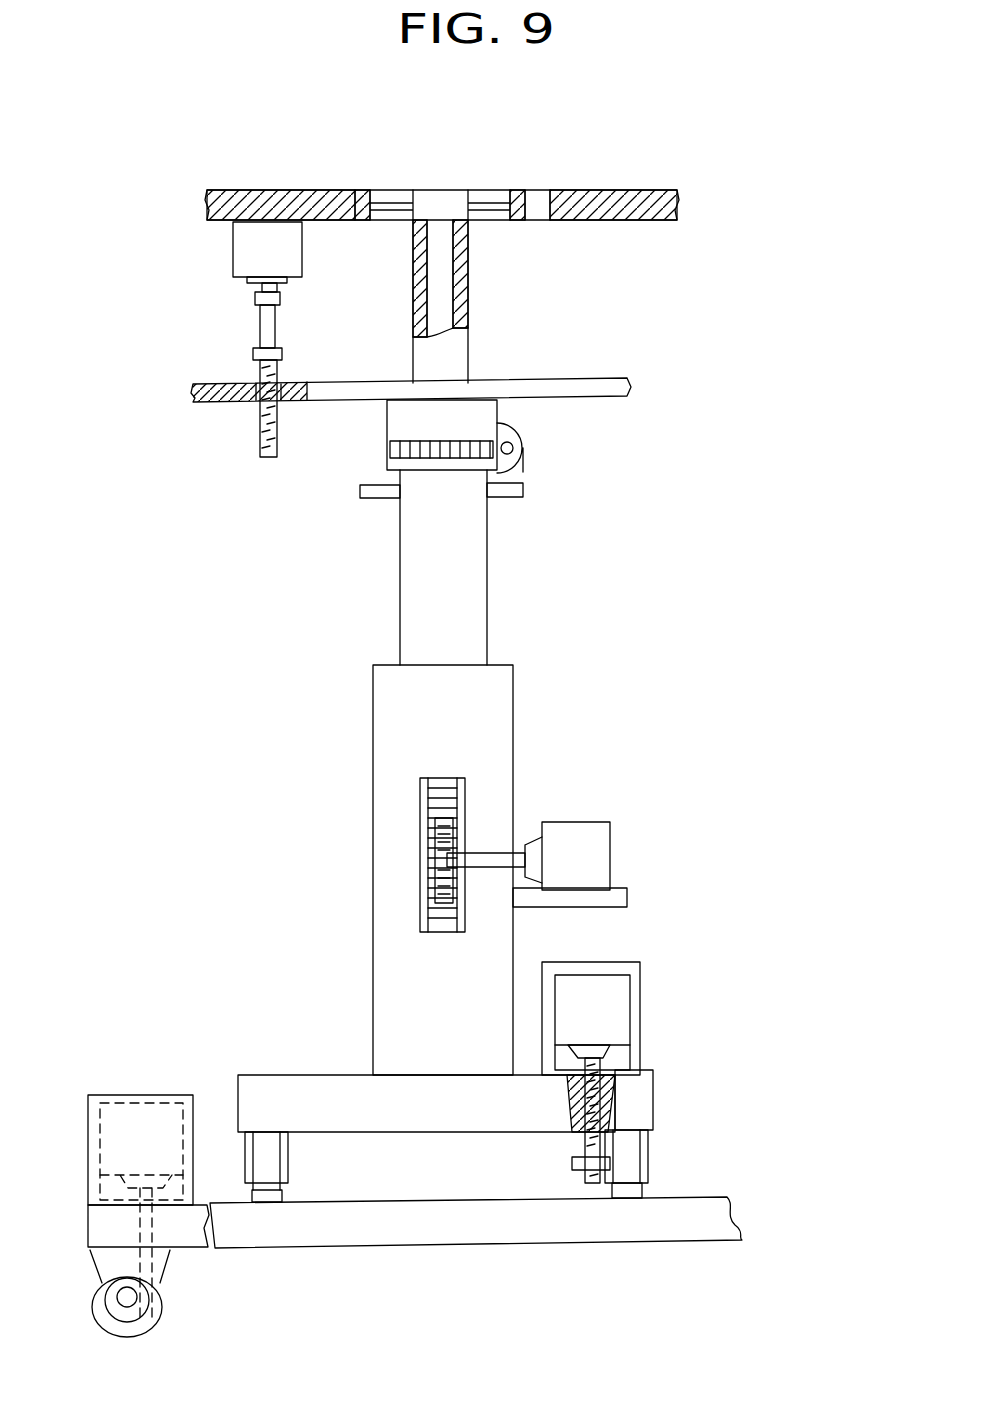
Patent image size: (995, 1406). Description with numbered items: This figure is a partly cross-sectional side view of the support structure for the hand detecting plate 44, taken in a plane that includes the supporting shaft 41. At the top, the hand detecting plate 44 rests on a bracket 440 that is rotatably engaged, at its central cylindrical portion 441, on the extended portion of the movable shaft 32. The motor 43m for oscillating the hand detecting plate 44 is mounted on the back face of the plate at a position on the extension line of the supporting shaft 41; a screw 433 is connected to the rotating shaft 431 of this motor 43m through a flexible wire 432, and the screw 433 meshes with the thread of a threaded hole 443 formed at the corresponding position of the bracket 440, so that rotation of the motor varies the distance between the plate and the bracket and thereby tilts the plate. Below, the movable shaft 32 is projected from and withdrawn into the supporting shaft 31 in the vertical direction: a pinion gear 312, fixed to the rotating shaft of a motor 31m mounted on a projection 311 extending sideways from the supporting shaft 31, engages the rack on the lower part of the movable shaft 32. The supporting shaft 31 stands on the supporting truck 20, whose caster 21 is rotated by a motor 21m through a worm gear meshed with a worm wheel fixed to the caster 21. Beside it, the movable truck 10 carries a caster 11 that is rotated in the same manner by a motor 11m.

The movable truck 10 is at (402, 1234).
The caster 11 is at (153, 1303).
The motor 11m is at (152, 1127).
The supporting truck 20 is at (398, 1020).
The caster 21 is at (272, 1160).
The motor 21m is at (607, 1007).
The supporting shaft 31 is at (515, 697).
The motor 31m is at (593, 822).
The projection 311 is at (603, 897).
The pinion gear 312 is at (428, 860).
The movable shaft 32 is at (465, 537).
The supporting shaft 41 is at (387, 199).
The hand detecting plate 44 is at (610, 186).
The central cylindrical portion 441 is at (468, 260).
The bracket 440 is at (597, 382).
The motor 43m is at (296, 242).
The rotating shaft 431 is at (252, 290).
The flexible wire 432 is at (266, 322).
The screw 433 is at (258, 437).
The threaded hole 443 is at (279, 418).